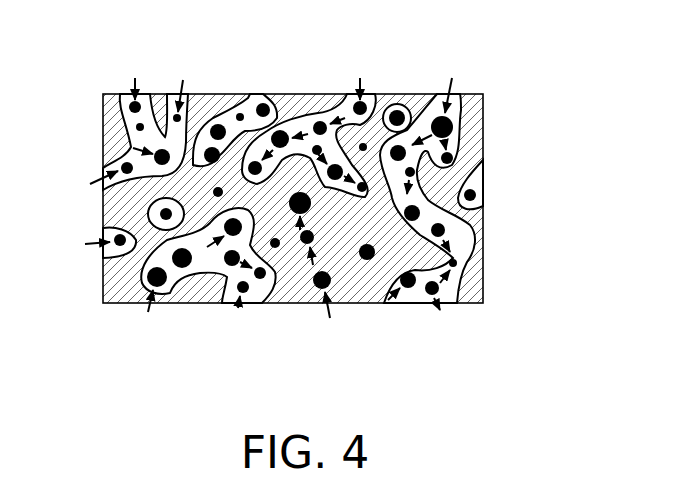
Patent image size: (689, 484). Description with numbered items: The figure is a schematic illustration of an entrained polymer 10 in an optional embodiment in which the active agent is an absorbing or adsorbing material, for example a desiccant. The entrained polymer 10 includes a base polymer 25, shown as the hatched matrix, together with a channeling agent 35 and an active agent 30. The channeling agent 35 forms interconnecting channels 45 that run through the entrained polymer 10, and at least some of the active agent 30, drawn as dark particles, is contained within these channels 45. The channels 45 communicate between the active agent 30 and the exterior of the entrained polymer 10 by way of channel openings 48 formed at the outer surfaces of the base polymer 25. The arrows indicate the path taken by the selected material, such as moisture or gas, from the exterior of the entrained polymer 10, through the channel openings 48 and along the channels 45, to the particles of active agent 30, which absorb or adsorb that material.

The entrained polymer 10 is at (530, 124).
The base polymer 25 is at (484, 162).
The active agent 30 is at (406, 106).
The channeling agent 35 is at (292, 104).
The interconnecting channels 45 is at (125, 150).
The channel openings 48 is at (253, 96).